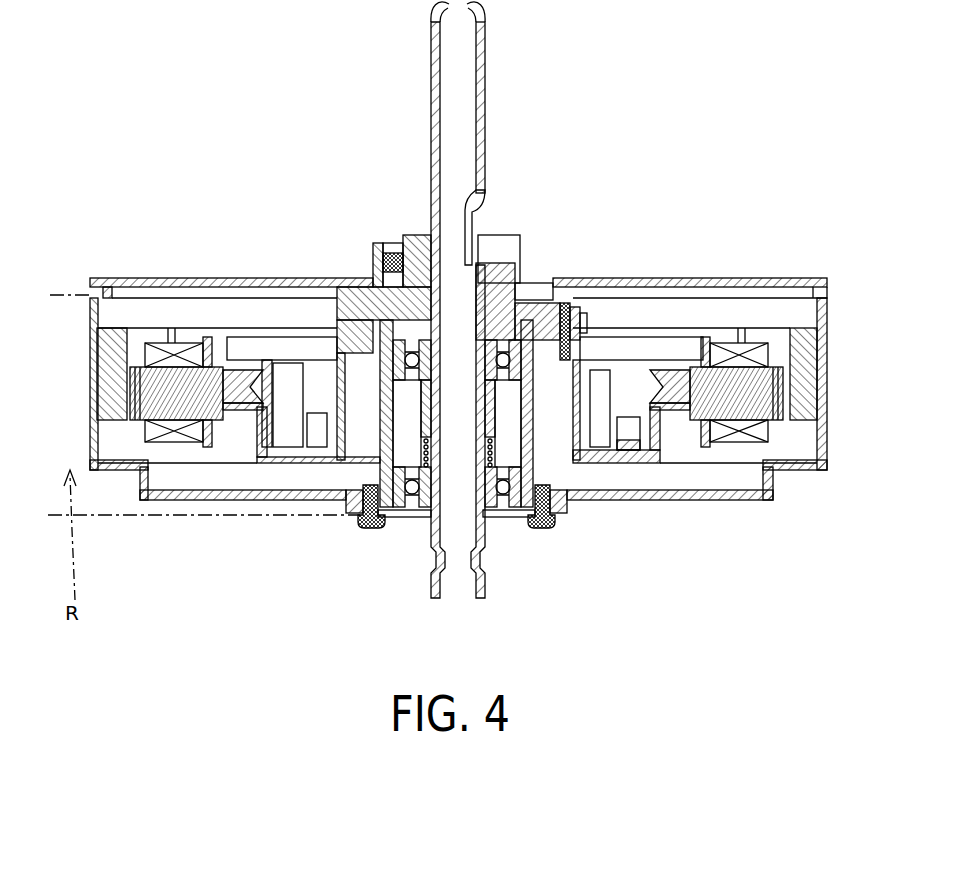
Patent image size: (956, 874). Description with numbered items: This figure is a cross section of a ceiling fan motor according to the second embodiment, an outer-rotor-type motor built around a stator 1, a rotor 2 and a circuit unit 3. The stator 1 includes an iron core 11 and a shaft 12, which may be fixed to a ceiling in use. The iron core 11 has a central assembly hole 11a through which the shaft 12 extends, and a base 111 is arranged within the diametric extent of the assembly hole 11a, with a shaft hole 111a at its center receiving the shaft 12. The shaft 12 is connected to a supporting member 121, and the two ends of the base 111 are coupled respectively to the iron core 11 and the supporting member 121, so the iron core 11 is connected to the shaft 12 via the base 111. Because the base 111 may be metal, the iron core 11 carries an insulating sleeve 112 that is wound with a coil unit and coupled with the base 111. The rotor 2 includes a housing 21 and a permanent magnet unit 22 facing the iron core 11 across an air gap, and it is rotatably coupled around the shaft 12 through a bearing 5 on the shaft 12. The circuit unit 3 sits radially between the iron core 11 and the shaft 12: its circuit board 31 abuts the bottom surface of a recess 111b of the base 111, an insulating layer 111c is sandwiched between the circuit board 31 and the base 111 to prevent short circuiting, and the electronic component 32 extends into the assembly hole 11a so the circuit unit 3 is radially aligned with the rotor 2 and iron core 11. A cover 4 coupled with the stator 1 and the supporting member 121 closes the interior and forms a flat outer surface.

The stator 1 is at (462, 315).
The rotor 2 is at (458, 464).
The circuit unit 3 is at (447, 299).
The cover 4 is at (735, 278).
The bearing 5 is at (517, 517).
The iron core 11 is at (217, 392).
The assembly hole 11a is at (267, 380).
The shaft 12 is at (485, 125).
The housing 21 is at (716, 500).
The permanent magnet unit 22 is at (800, 417).
The circuit board 31 is at (305, 365).
The electronic component 32 is at (287, 373).
The base 111 is at (416, 480).
The shaft hole 111a is at (375, 372).
The recess 111b is at (280, 463).
The insulating layer 111c is at (221, 500).
The sleeve 112 is at (207, 340).
The supporting member 121 is at (517, 263).